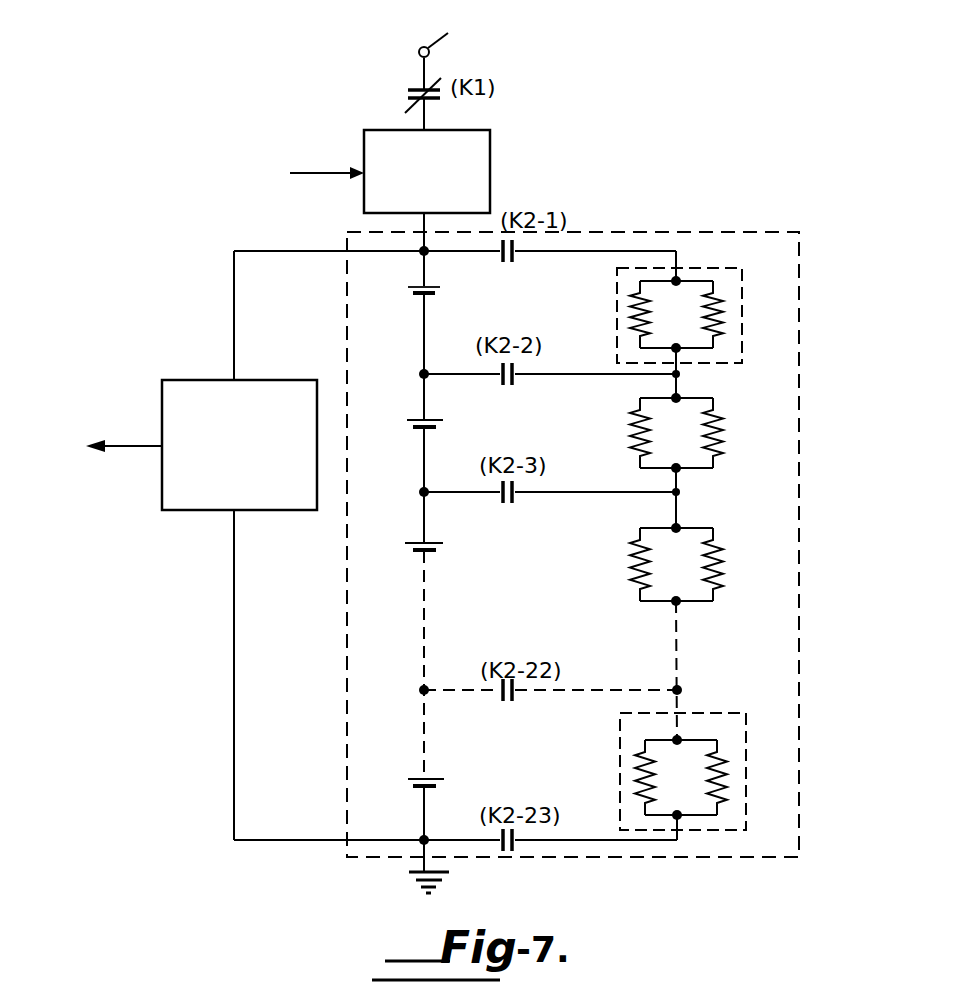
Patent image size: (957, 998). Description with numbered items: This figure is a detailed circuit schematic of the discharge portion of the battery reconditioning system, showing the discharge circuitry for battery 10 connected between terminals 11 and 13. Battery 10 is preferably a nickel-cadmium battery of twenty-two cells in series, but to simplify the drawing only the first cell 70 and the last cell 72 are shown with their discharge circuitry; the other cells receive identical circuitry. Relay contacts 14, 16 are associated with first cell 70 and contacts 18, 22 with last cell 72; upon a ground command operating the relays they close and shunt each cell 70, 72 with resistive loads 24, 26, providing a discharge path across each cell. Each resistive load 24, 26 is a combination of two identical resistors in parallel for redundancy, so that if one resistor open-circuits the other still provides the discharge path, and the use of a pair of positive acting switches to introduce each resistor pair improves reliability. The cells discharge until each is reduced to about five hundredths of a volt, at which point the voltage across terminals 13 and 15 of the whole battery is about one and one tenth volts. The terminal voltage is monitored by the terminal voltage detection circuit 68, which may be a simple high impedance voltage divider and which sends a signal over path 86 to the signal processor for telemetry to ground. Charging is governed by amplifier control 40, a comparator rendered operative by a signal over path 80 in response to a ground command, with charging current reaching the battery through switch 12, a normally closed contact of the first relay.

The battery 10 is at (785, 583).
The terminal 11 is at (445, 29).
The S1 switch 12 is at (405, 93).
The terminal 13 is at (421, 839).
The K2 relay contact 14 is at (514, 264).
The terminal 15 is at (427, 255).
The K2 relay contact 16 is at (515, 387).
The K2 relay contact 18 is at (504, 707).
The K2 relay contact 22 is at (504, 856).
The resistive load 24 is at (744, 308).
The resistive load 26 is at (748, 757).
The amplifier control 40 is at (364, 197).
The terminal voltage detection circuit 68 is at (271, 378).
The first cell 70 is at (405, 291).
The last cell 72 is at (412, 779).
The path 80 is at (308, 173).
The path 86 is at (136, 442).